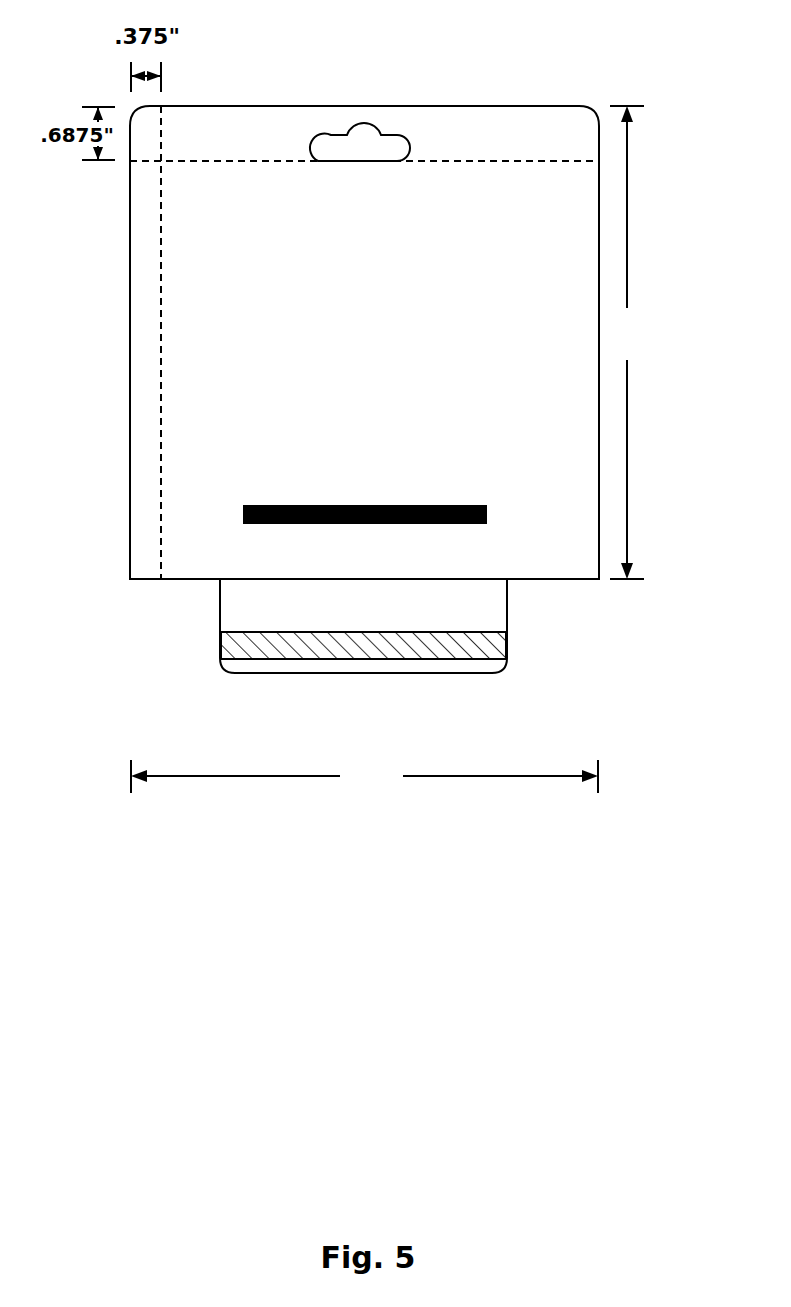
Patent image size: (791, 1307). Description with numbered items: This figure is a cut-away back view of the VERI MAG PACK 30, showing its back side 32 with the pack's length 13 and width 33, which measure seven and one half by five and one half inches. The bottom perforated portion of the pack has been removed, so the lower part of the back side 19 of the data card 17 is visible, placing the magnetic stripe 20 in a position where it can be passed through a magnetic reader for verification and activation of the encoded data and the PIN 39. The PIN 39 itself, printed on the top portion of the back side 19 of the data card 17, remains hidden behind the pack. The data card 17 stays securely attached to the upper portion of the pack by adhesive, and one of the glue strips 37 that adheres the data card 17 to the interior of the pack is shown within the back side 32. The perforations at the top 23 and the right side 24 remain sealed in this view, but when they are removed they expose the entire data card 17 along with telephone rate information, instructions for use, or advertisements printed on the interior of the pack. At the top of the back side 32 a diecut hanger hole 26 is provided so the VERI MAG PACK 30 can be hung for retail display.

The length 13 is at (627, 241).
The data card 17 is at (206, 609).
The back side of data card 19 is at (363, 605).
The magnetic stripe 20 is at (481, 646).
The top side perforation 23 is at (245, 161).
The right side perforation 24 is at (162, 239).
The diecut hanger hole 26 is at (363, 135).
The VERI MAG PACK 30 is at (484, 94).
The back side of VERI MAG PACK 32 is at (380, 370).
The width 33 is at (242, 776).
The glue strip 37 is at (285, 510).
The PIN 39 is at (485, 572).